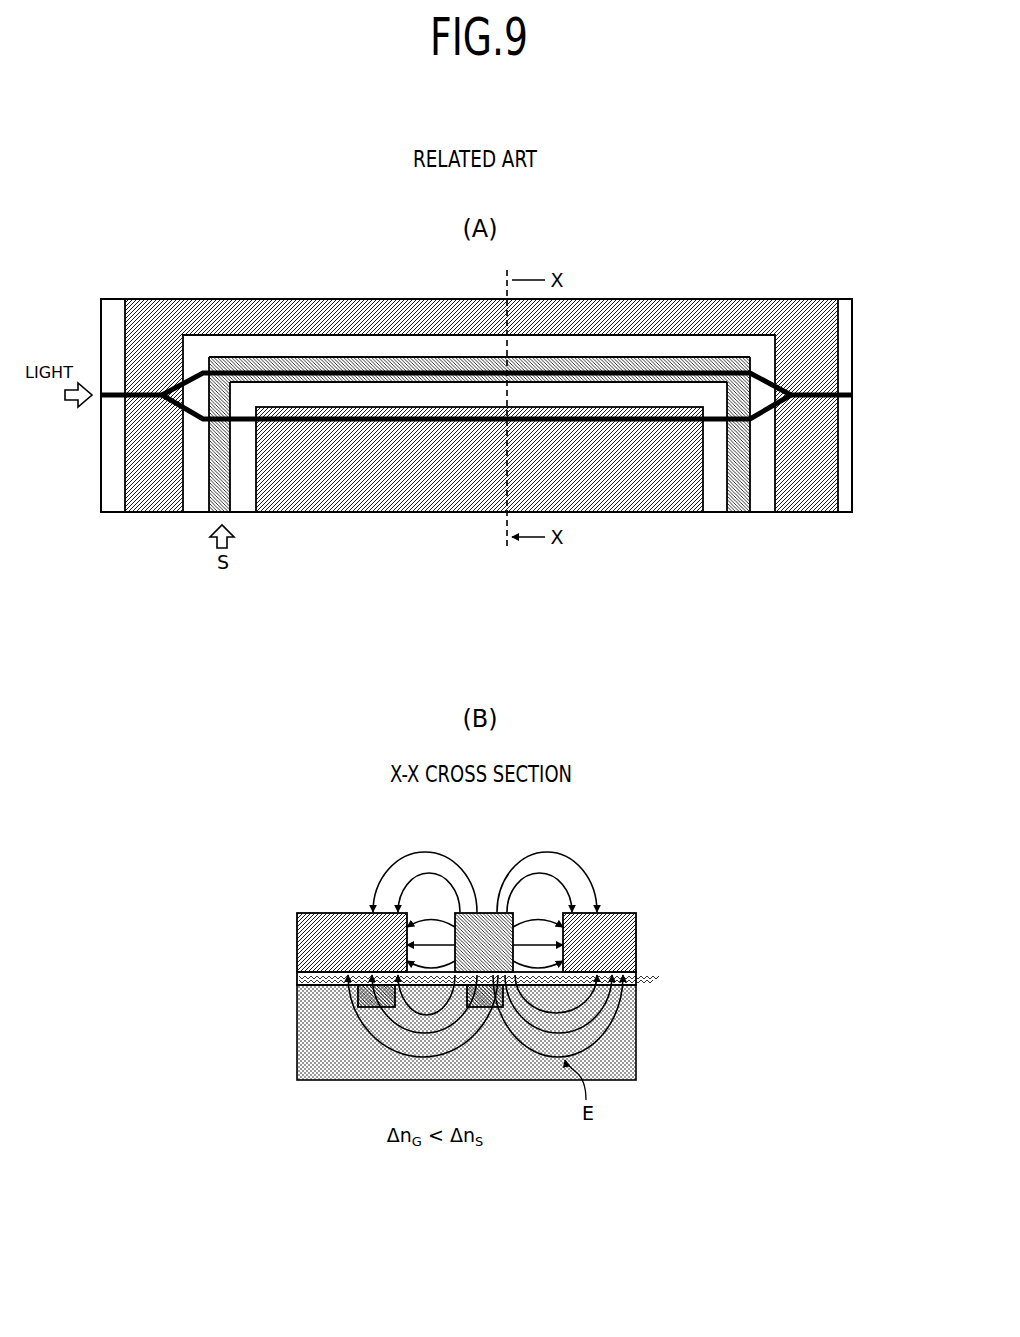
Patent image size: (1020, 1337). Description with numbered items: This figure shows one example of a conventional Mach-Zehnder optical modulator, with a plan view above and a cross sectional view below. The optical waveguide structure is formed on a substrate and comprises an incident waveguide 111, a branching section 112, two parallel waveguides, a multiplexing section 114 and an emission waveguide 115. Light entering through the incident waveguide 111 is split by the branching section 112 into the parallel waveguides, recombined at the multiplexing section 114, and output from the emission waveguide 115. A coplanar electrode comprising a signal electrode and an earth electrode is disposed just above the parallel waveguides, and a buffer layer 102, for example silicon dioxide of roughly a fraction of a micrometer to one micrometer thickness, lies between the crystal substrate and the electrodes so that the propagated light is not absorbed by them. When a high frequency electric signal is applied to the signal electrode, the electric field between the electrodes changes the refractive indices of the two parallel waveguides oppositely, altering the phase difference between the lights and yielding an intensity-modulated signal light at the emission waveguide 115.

The buffer layer 102 is at (636, 978).
The incident waveguide 111 is at (113, 392).
The branching section 112 is at (163, 388).
The multiplexing section 114 is at (793, 393).
The emission waveguide 115 is at (840, 397).